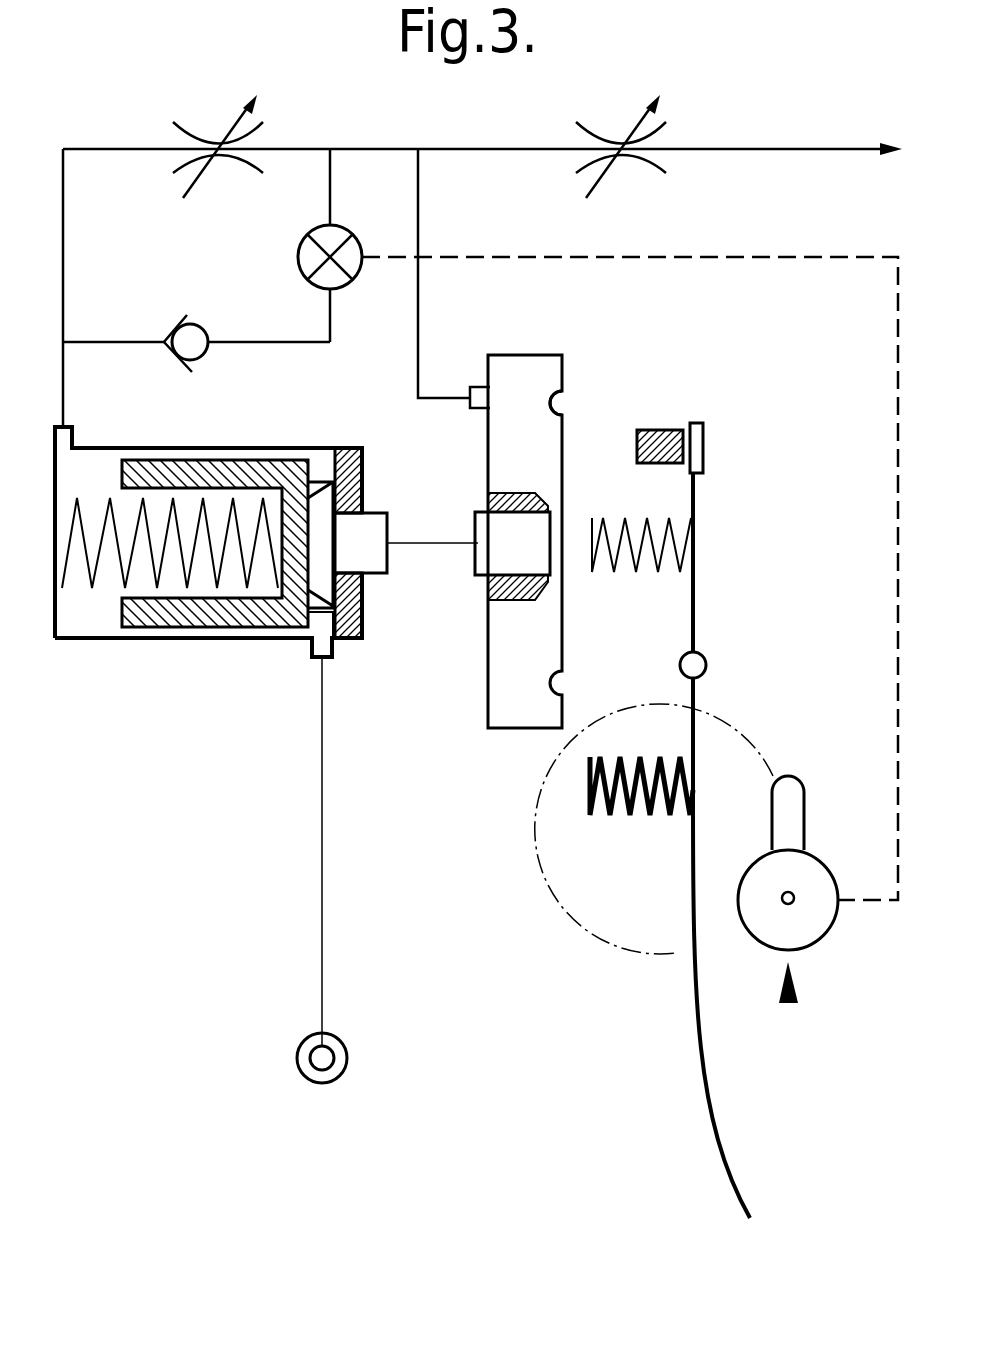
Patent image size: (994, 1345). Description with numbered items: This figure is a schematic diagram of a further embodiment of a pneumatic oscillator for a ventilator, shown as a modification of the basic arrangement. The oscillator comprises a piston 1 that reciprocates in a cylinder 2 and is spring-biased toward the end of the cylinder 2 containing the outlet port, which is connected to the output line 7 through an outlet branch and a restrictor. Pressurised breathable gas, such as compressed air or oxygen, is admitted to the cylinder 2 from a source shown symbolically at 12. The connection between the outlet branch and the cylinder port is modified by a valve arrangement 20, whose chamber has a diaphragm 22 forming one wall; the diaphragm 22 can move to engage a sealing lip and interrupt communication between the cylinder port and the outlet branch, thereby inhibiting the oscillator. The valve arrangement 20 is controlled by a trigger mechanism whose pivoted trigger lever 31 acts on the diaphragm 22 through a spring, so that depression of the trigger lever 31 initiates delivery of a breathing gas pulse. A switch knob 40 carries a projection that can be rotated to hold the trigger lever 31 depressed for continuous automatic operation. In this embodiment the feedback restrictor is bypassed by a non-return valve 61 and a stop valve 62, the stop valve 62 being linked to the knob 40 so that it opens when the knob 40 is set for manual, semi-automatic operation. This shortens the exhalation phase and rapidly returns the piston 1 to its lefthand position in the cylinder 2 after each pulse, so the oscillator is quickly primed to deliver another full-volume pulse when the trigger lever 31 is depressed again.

The piston 1 is at (165, 612).
The cylinder 2 is at (255, 448).
The output line 7 is at (805, 149).
The source of pressurised breathable gas 12 is at (305, 1050).
The valve arrangement 20 is at (517, 735).
The diaphragm 22 is at (555, 412).
The trigger lever 31 is at (708, 1088).
The switch knob 40 is at (815, 918).
The non-return valve 61 is at (180, 325).
The stop valve 62 is at (317, 255).